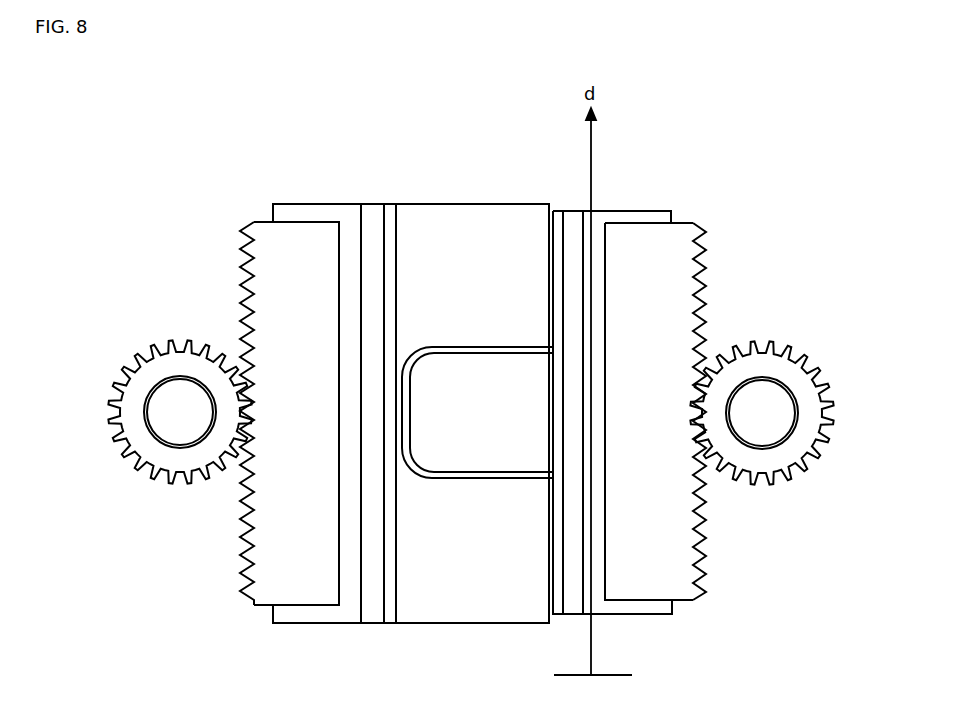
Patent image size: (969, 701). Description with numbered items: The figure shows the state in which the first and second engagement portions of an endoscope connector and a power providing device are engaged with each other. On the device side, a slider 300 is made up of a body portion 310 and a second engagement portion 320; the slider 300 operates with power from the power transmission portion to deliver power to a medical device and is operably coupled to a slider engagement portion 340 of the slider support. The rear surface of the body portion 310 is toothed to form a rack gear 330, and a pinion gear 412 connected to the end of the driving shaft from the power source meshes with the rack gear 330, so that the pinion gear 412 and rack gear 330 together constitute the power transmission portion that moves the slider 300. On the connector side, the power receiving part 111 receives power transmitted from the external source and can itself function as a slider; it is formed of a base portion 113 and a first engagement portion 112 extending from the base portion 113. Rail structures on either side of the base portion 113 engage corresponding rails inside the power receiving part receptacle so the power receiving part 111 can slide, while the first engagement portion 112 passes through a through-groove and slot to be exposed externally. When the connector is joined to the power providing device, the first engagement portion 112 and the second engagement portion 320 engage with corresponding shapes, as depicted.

The slider 300 is at (278, 170).
The body portion 310 is at (349, 204).
The second engagement portion 320 is at (497, 210).
The rack gear 330 is at (243, 242).
The slider engagement portion 340 is at (390, 205).
The power receiving part 111 is at (688, 197).
The first engagement portion 112 is at (510, 443).
The base portion 113 is at (637, 212).
The pinion gear 412 is at (128, 368).